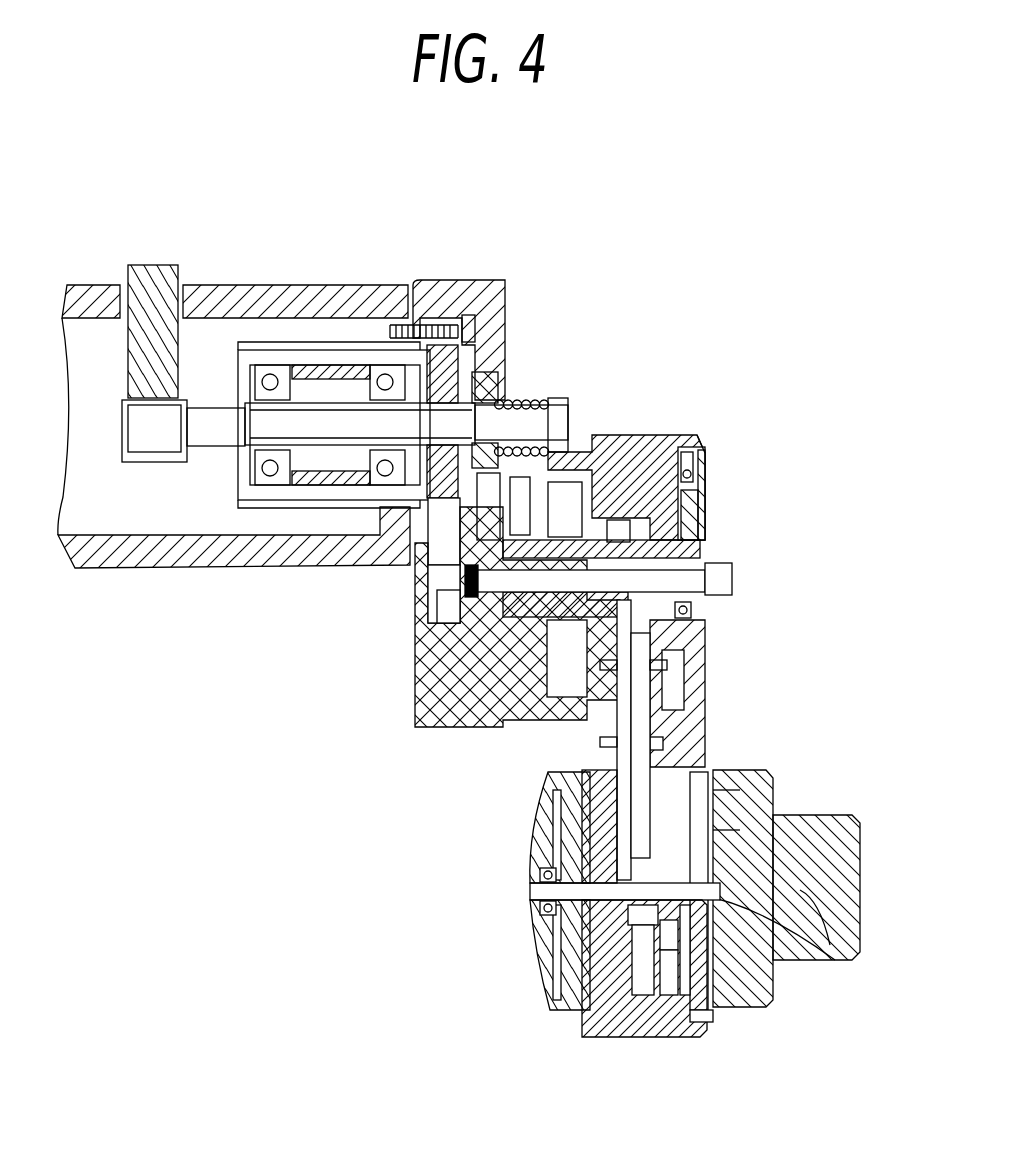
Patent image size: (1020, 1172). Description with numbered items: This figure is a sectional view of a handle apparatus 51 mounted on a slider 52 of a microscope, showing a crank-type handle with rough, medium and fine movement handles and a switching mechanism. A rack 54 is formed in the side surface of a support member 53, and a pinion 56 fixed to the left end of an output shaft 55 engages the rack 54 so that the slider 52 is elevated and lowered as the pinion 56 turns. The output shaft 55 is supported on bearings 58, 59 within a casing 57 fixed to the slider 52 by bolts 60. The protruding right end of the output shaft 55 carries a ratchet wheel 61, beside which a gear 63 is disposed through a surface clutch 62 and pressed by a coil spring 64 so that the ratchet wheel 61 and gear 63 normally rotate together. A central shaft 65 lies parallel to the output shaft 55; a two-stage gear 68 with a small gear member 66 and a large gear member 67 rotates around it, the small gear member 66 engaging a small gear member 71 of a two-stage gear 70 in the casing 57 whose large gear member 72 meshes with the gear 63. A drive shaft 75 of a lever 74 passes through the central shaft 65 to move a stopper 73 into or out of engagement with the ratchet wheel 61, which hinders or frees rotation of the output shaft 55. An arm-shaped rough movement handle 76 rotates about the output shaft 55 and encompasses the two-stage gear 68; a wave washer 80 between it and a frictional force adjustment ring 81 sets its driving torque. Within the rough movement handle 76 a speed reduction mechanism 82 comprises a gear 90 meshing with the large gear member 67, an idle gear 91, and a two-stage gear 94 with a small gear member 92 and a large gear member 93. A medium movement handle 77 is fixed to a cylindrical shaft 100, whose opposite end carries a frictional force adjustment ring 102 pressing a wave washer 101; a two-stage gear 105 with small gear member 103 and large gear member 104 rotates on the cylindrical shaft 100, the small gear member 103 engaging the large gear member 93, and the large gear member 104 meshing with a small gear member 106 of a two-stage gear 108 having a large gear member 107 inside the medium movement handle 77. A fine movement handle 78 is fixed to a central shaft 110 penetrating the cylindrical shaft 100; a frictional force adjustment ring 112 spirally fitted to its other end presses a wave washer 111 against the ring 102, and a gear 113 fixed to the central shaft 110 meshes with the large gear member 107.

The handle apparatus 51 is at (575, 300).
The slider 52 is at (243, 290).
The support member 53 is at (158, 272).
The rack 54 is at (138, 372).
The output shaft 55 is at (302, 420).
The pinion 56 is at (120, 445).
The casing 57 is at (262, 505).
The bearing 58 is at (270, 472).
The bearing 59 is at (300, 490).
The bolt 60 is at (392, 330).
The ratchet wheel 61 is at (478, 332).
The surface clutch 62 is at (512, 398).
The gear 63 is at (500, 390).
The coil spring 64 is at (548, 396).
The central shaft 65 is at (655, 578).
The small gear member 66 is at (437, 722).
The large gear member 67 is at (698, 468).
The two-stage gear 68 is at (695, 447).
The two-stage gear 70 is at (440, 520).
The small gear member 71 is at (640, 465).
The large gear member 72 is at (480, 510).
The stopper 73 is at (425, 560).
The lever 74 is at (718, 598).
The drive shaft 75 is at (450, 595).
The rough movement handle 76 is at (665, 470).
The medium movement handle 77 is at (760, 1000).
The fine movement handle 78 is at (818, 952).
The wave washer 80 is at (692, 482).
The frictional force adjustment ring 81 is at (700, 510).
The speed reduction mechanism 82 is at (631, 698).
The gear 90 is at (630, 665).
The gear 91 is at (700, 790).
The small gear member 92 is at (715, 800).
The large gear member 93 is at (775, 850).
The two-stage gear 94 is at (745, 840).
The cylindrical shaft 100 is at (600, 1012).
The wave washer 101 is at (590, 1012).
The frictional force adjustment ring 102 is at (575, 975).
The small gear member 103 is at (612, 1030).
The large gear member 104 is at (660, 1020).
The two-stage gear 105 is at (640, 1030).
The small gear member 106 is at (682, 1030).
The large gear member 107 is at (705, 1035).
The two-stage gear 108 is at (695, 1025).
The central shaft 110 is at (540, 892).
The wave washer 111 is at (548, 928).
The frictional force adjustment ring 112 is at (555, 960).
The gear 113 is at (830, 955).